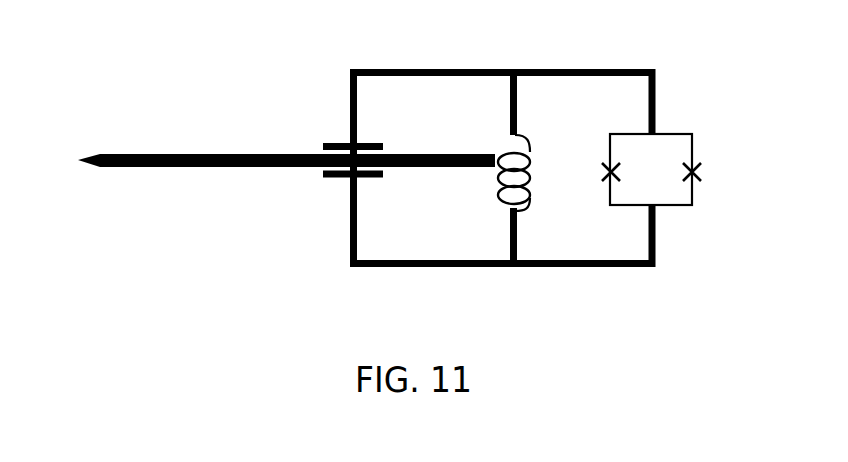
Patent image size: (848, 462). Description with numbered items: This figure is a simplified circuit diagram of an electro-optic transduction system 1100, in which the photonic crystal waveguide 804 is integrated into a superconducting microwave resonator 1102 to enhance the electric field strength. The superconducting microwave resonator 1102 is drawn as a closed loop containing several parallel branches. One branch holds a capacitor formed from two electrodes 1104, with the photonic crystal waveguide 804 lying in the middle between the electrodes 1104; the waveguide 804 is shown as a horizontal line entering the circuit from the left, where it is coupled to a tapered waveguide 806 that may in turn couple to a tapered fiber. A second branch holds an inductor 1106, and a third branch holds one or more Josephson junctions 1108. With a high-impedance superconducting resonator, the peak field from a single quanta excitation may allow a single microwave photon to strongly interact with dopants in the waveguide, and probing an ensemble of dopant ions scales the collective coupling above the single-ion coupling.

The resonator readout system 1100 is at (85, 68).
The superconducting microwave resonator 1102 is at (310, 75).
The electrodes 1104 is at (338, 143).
The inductor 1106 is at (502, 152).
The Josephson junctions 1108 is at (612, 164).
The photonic crystal waveguide 804 is at (342, 162).
The tapered waveguide 806 is at (188, 162).